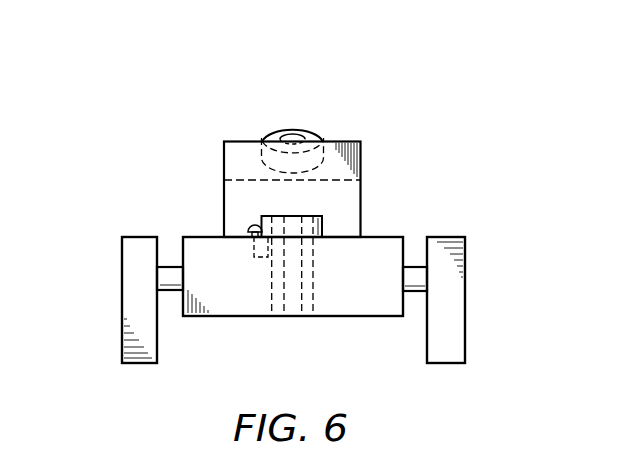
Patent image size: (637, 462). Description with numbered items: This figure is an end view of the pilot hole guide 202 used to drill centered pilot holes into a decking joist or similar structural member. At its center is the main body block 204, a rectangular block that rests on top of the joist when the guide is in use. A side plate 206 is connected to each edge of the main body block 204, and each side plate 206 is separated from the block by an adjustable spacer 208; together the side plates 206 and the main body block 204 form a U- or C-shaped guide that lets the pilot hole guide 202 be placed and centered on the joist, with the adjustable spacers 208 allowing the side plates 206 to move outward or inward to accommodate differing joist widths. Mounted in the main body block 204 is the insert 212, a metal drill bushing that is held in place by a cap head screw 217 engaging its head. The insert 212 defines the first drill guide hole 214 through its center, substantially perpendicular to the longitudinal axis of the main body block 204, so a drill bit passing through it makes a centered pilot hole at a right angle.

The pilot hole guide 202 is at (203, 98).
The main body block 204 is at (223, 303).
The side plates 206 is at (121, 305).
The adjustable spacers 208 is at (170, 266).
The insert 212 is at (318, 204).
The first drill guide hole 214 is at (295, 308).
The screw 217 is at (264, 229).